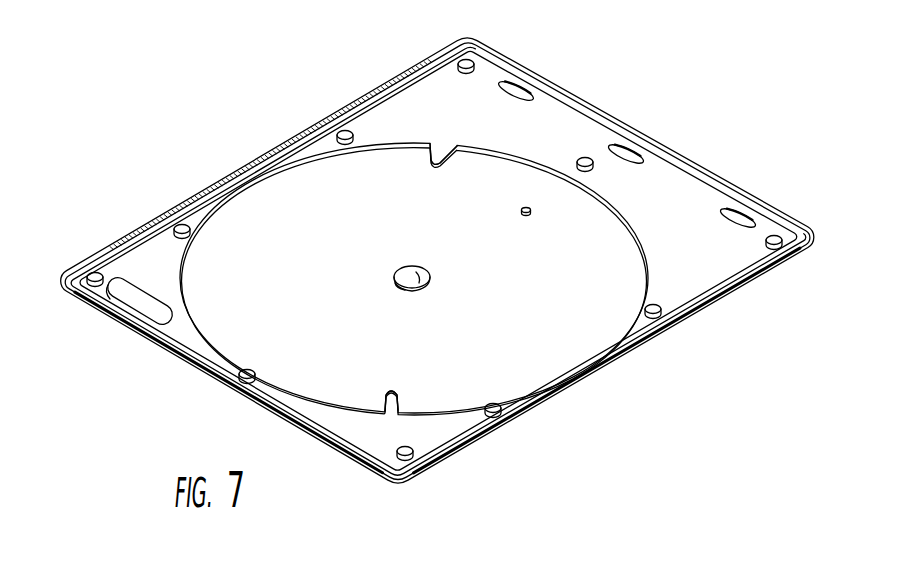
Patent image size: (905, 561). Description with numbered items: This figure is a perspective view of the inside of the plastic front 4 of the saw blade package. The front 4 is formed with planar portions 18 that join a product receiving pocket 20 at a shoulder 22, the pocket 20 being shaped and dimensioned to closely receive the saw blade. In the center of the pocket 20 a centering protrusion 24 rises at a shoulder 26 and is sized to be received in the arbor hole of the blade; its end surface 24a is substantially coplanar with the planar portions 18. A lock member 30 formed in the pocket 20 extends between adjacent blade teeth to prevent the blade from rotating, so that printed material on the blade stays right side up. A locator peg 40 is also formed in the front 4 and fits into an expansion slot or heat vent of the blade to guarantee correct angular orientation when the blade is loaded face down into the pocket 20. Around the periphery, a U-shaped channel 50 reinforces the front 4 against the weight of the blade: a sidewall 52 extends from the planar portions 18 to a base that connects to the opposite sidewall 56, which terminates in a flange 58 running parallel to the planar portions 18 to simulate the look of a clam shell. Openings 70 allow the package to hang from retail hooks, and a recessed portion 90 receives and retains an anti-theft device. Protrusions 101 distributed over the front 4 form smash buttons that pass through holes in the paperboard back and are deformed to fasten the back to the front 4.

The plastic front 4 is at (263, 414).
The planar portions 18 is at (385, 125).
The product receiving pocket 20 is at (505, 170).
The shoulder 22 is at (428, 141).
The centering protrusion 24 is at (420, 277).
The end surface 24a is at (430, 280).
The shoulder 26 is at (395, 283).
The lock member 30 is at (445, 166).
The locator peg 40 is at (527, 216).
The U-shaped channel 50 is at (85, 268).
The sidewall 52 is at (123, 252).
The sidewall 56 is at (147, 244).
The flange 58 is at (62, 278).
The openings 70 is at (502, 90).
The recessed portion 90 is at (160, 297).
The protrusions 101 is at (463, 60).